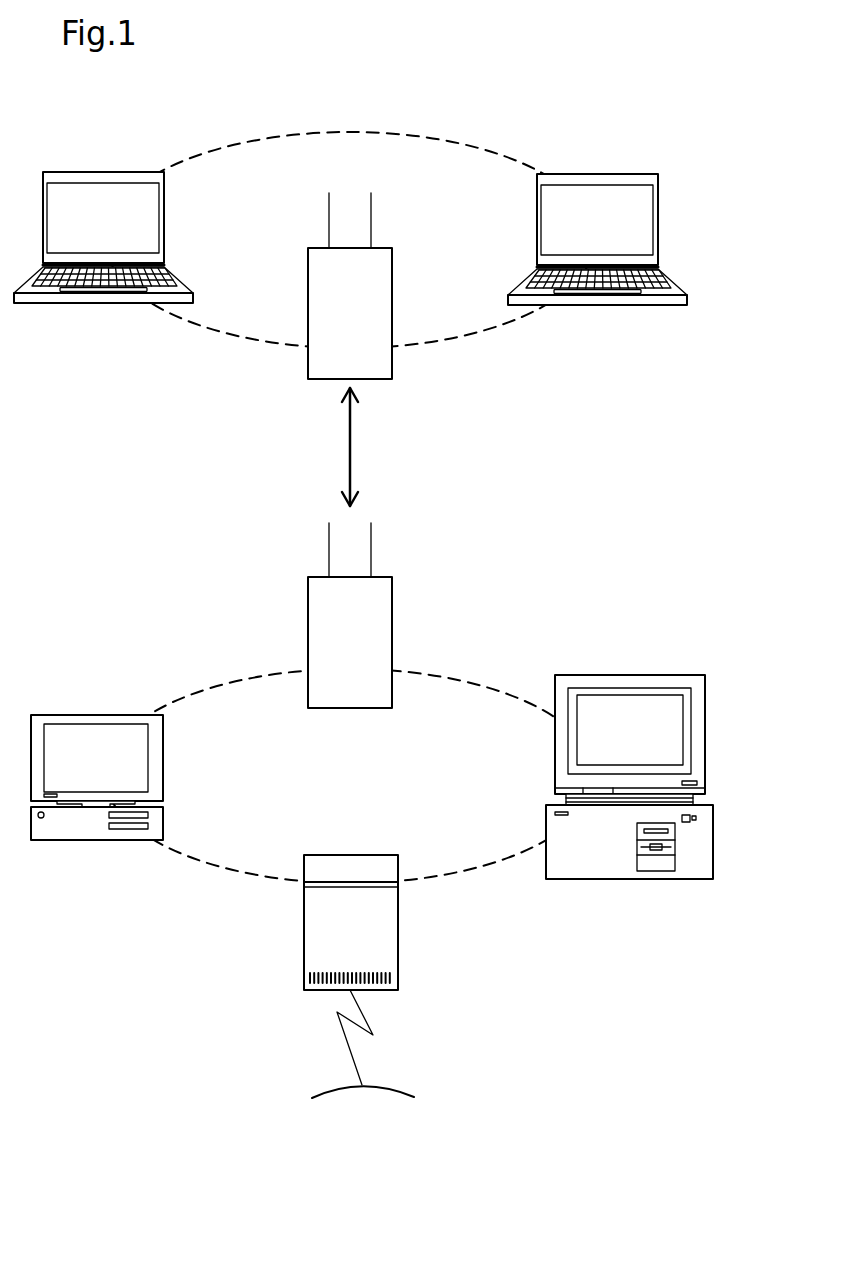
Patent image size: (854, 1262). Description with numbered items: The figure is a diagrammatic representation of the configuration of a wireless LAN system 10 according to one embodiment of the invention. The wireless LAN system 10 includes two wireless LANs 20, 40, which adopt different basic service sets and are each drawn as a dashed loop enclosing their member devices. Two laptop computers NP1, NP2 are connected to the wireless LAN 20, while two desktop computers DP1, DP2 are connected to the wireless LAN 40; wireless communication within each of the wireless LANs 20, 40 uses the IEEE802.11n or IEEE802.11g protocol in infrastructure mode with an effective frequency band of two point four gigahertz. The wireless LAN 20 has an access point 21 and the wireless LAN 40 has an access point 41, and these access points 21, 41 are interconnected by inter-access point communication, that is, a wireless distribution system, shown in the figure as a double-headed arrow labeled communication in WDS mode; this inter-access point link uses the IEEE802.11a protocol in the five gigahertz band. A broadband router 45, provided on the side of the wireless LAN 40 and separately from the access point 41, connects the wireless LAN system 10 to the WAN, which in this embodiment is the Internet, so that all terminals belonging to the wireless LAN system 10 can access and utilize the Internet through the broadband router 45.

The wireless LAN system 10 is at (542, 580).
The wireless LAN 20 is at (363, 180).
The access point 21 is at (392, 358).
The wireless LAN 40 is at (365, 788).
The access point 41 is at (392, 600).
The broadband router 45 is at (398, 922).
The laptop computer NP1 is at (101, 172).
The laptop computer NP2 is at (597, 174).
The desktop computer DP1 is at (66, 715).
The desktop computer DP2 is at (632, 675).
The wide area network WAN is at (363, 1055).